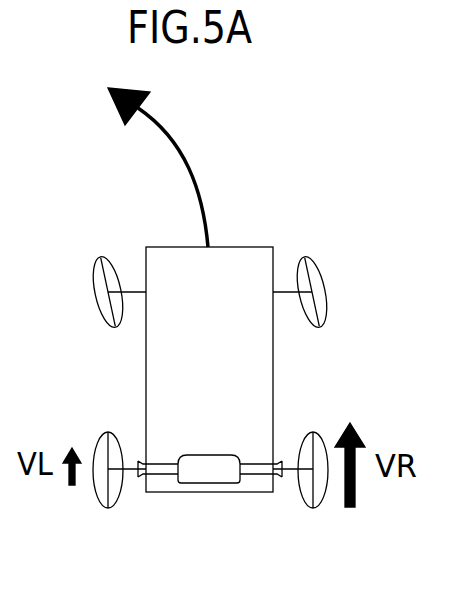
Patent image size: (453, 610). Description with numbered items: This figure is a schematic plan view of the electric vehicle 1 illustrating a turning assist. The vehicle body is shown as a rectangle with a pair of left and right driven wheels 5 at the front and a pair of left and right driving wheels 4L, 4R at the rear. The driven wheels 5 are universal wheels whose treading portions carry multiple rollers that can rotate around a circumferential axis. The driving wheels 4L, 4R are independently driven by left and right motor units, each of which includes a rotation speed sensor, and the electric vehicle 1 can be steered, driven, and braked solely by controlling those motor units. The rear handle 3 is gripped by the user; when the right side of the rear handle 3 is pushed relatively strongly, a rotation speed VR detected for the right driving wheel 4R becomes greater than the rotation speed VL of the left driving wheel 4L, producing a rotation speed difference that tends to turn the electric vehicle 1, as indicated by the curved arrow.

The electric vehicle 1 is at (274, 381).
The rear handle 3 is at (208, 484).
The left driving wheel 4L is at (110, 500).
The right driving wheel 4R is at (308, 500).
The driven wheels 5 is at (92, 272).